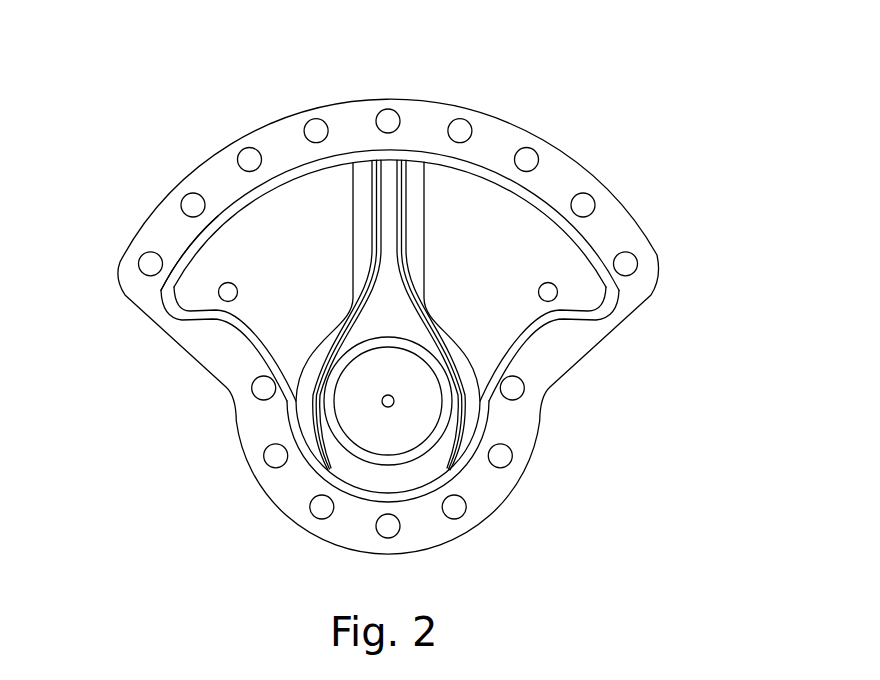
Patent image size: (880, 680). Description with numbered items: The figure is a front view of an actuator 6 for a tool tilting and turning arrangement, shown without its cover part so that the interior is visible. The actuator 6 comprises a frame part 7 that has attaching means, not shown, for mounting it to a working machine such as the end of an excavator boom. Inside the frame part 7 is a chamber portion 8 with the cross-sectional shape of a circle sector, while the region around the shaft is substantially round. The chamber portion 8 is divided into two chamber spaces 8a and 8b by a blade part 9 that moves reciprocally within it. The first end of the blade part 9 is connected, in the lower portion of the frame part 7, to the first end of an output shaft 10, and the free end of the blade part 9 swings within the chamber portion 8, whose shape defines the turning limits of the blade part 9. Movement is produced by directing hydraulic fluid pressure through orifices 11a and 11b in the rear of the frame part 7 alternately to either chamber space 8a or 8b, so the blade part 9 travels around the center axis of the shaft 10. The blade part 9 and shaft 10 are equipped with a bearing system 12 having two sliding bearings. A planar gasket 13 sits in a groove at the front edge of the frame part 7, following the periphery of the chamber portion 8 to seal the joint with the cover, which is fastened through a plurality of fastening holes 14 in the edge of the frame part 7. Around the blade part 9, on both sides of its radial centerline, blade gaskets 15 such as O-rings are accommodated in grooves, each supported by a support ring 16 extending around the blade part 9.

The actuator 6 is at (139, 70).
The frame part 7 is at (617, 225).
The chamber portion 8 is at (471, 187).
The first chamber space 8a is at (243, 222).
The second chamber space 8b is at (527, 222).
The blade part 9 is at (358, 282).
The output shaft 10 is at (433, 417).
The first orifice 11a is at (190, 332).
The second orifice 11b is at (588, 332).
The bearing system 12 is at (323, 414).
The gasket 13 is at (181, 250).
The fastening holes 14 is at (636, 267).
The blade gaskets 15 is at (377, 174).
The support ring 16 is at (403, 180).